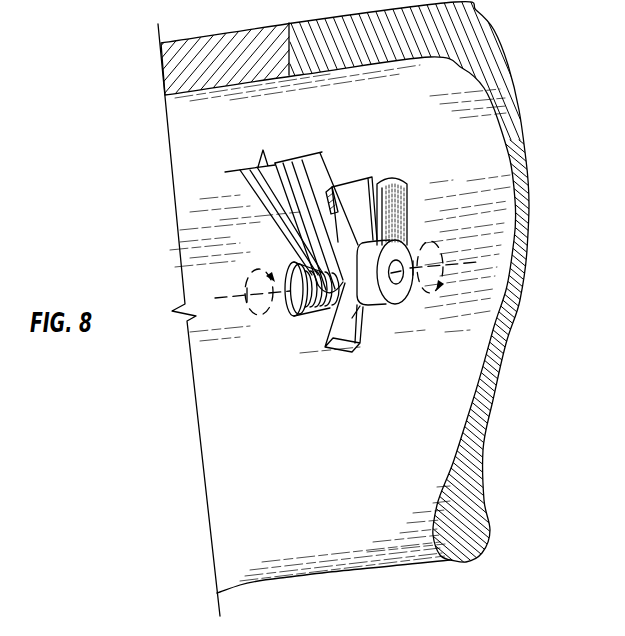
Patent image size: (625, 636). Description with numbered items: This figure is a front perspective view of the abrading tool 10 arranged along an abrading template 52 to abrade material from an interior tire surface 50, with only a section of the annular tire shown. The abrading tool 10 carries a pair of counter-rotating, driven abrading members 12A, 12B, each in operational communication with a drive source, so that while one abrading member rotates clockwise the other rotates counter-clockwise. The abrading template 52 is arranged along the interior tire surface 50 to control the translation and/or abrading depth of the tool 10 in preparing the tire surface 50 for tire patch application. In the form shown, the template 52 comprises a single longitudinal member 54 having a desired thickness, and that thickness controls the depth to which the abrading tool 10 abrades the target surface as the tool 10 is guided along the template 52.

The abrading tool 10 is at (394, 150).
The abrading member 12A is at (287, 313).
The abrading member 12B is at (389, 304).
The interior tire surface 50 is at (527, 264).
The abrading template 52 is at (361, 340).
The longitudinal member 54 is at (331, 338).